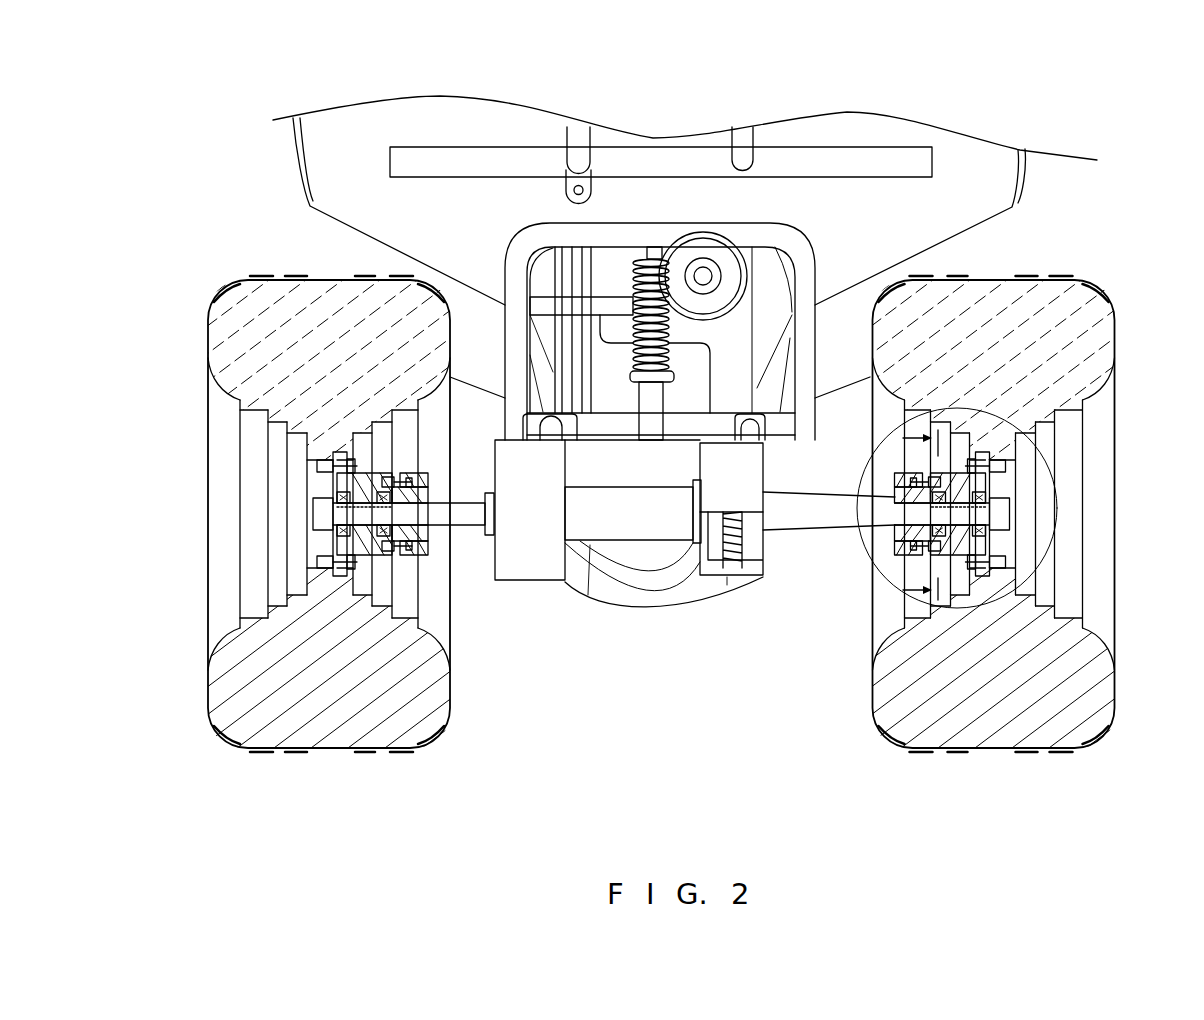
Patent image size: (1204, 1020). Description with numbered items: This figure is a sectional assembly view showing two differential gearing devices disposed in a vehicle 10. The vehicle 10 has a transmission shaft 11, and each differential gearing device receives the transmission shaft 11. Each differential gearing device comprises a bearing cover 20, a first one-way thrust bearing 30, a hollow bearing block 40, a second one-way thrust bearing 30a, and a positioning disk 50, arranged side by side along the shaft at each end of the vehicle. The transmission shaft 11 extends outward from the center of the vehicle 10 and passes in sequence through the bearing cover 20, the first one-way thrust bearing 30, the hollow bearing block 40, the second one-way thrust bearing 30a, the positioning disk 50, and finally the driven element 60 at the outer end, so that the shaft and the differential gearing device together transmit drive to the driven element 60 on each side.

The vehicle 10 is at (661, 135).
The transmission shaft 11 is at (467, 522).
The bearing cover 20 is at (410, 500).
The first one-way thrust bearing 30 is at (390, 553).
The second one-way thrust bearing 30a is at (335, 540).
The hollow bearing block 40 is at (360, 440).
The positioning disk 50 is at (320, 513).
The driven element 60 is at (330, 742).